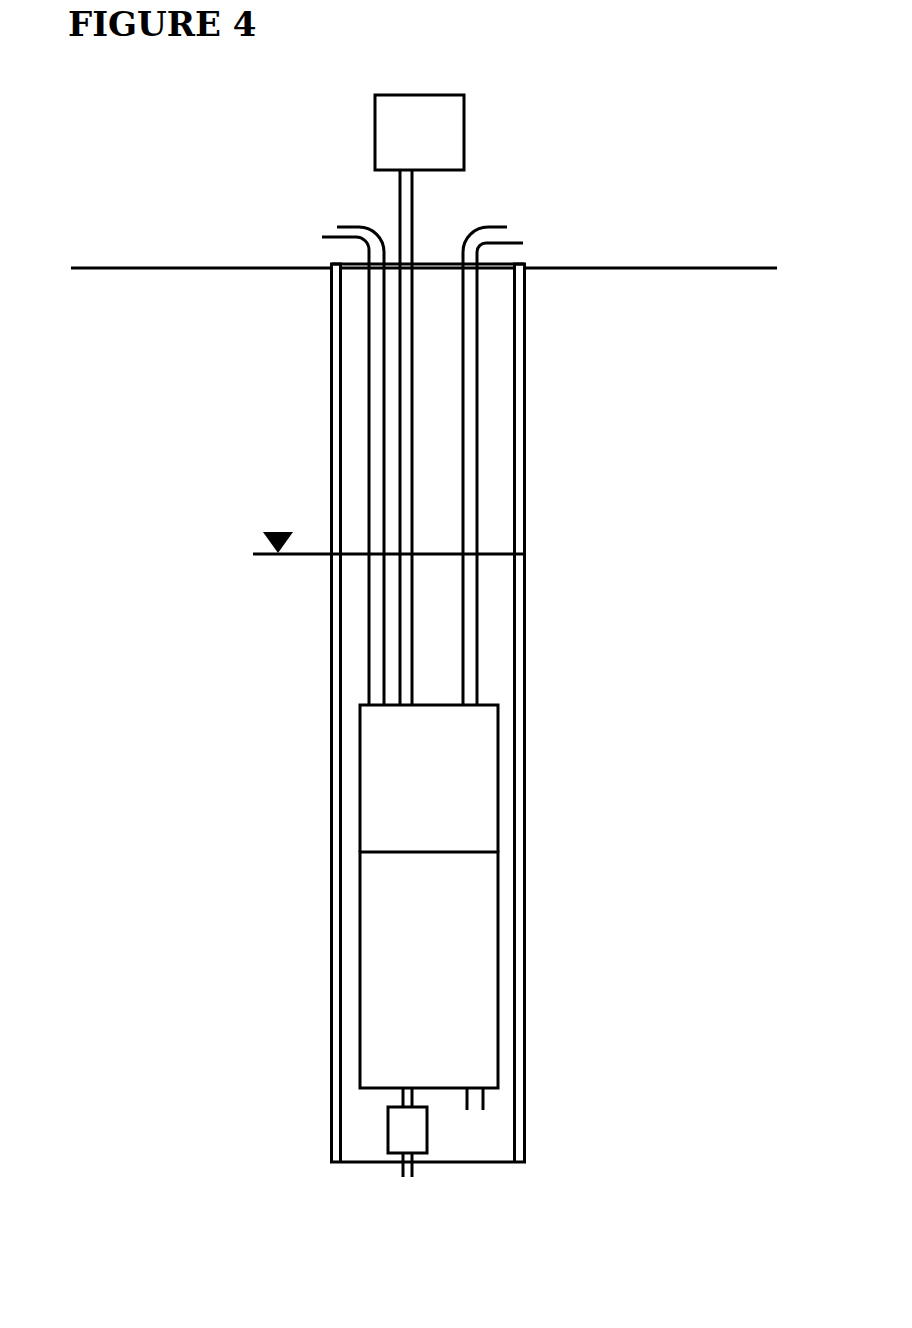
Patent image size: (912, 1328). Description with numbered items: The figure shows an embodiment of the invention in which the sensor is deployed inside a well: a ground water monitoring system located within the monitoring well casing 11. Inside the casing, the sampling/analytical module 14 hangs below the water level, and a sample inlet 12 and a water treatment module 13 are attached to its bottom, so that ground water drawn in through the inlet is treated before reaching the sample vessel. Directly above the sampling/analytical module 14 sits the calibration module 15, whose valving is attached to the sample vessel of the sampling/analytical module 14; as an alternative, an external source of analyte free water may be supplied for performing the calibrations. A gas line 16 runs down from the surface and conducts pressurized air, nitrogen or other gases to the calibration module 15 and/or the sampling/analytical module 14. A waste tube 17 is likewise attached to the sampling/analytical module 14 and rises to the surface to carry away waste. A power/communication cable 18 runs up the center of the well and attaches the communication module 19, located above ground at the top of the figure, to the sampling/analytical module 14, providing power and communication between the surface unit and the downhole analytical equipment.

The monitoring well casing 11 is at (523, 870).
The sample inlet 12 is at (489, 1104).
The water treatment module 13 is at (407, 1135).
The sampling/analytical module 14 is at (442, 981).
The calibration module 15 is at (442, 803).
The gas line 16 is at (503, 224).
The waste tube 17 is at (344, 221).
The power/communication cable 18 is at (415, 237).
The communication module 19 is at (438, 150).